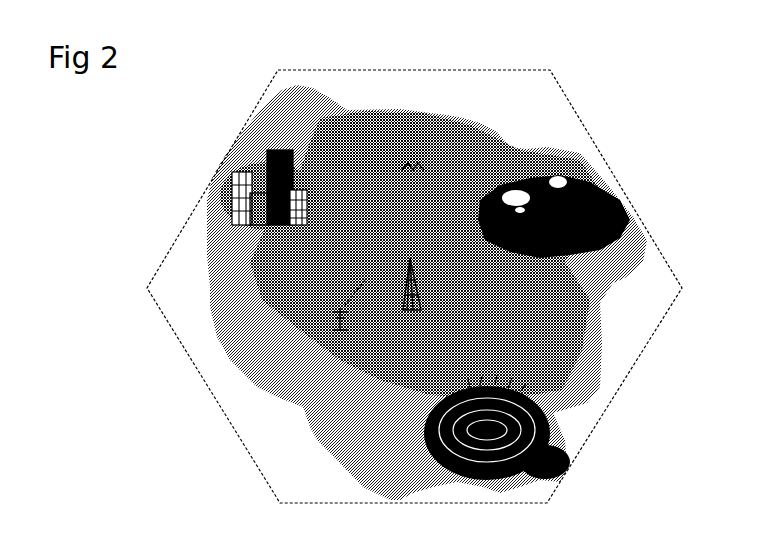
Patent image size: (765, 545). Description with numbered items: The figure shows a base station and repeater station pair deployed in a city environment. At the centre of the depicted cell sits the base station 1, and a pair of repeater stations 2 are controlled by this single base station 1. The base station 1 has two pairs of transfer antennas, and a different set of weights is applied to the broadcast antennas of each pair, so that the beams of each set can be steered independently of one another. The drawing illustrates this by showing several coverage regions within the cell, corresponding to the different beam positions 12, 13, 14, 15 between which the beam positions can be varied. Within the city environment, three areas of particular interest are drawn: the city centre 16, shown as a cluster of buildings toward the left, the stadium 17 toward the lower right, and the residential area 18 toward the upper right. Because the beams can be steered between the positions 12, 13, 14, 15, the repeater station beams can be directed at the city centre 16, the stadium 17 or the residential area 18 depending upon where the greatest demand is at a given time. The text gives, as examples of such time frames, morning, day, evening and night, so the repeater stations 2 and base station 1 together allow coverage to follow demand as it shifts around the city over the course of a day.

The base station 1 is at (417, 283).
The repeater station 2 is at (408, 110).
The beam position 12 is at (340, 117).
The beam position 13 is at (473, 120).
The beam position 14 is at (287, 287).
The beam position 15 is at (370, 370).
The city centre 16 is at (222, 182).
The stadium 17 is at (550, 423).
The residential area 18 is at (590, 185).